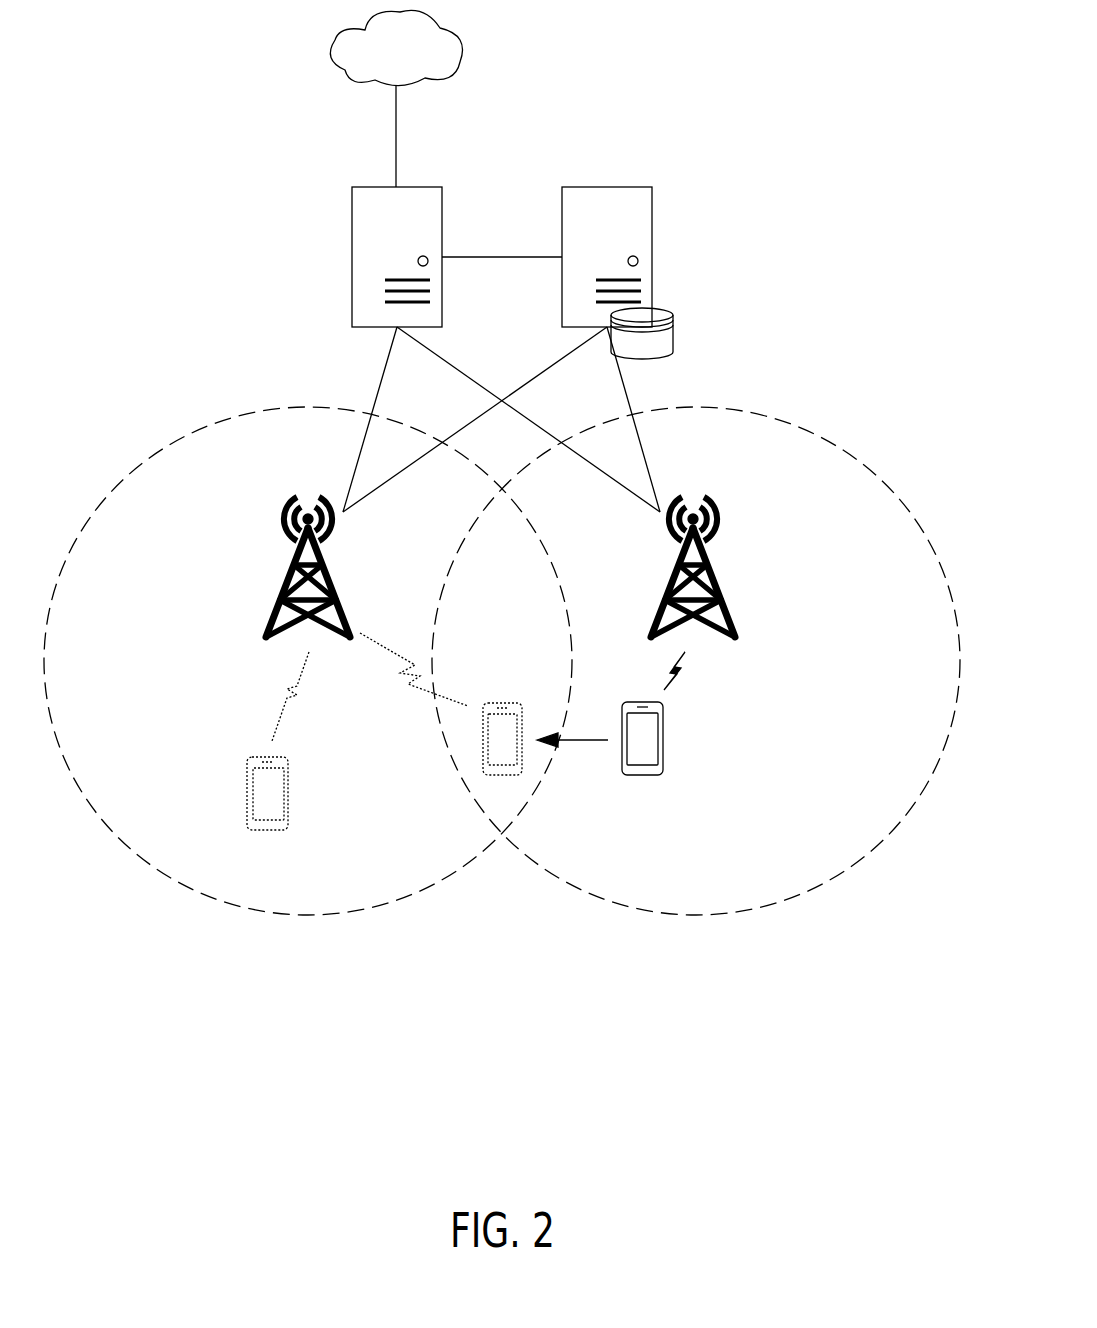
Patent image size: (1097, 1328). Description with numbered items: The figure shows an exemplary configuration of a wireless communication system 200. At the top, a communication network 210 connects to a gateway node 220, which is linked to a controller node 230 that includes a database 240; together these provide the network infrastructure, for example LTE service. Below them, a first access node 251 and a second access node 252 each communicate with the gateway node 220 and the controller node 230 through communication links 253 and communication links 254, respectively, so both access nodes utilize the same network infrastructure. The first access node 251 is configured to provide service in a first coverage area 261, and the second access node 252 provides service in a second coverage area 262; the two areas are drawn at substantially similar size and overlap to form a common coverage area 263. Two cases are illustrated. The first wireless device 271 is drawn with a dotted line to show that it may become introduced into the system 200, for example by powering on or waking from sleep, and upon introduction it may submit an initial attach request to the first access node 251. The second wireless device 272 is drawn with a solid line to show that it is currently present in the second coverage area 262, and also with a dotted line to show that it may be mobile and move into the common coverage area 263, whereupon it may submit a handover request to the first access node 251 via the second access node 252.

The system 200 is at (746, 85).
The communication network 210 is at (466, 48).
The gateway node 220 is at (352, 197).
The controller node 230 is at (652, 198).
The database 240 is at (673, 330).
The first access node 251 is at (290, 566).
The second access node 252 is at (718, 575).
The communication links 253 is at (450, 430).
The communication links 254 is at (630, 412).
The first coverage area 261 is at (294, 915).
The second coverage area 262 is at (727, 915).
The common coverage area 263 is at (505, 840).
The first wireless device 271 is at (247, 785).
The second wireless device 272 is at (663, 728).